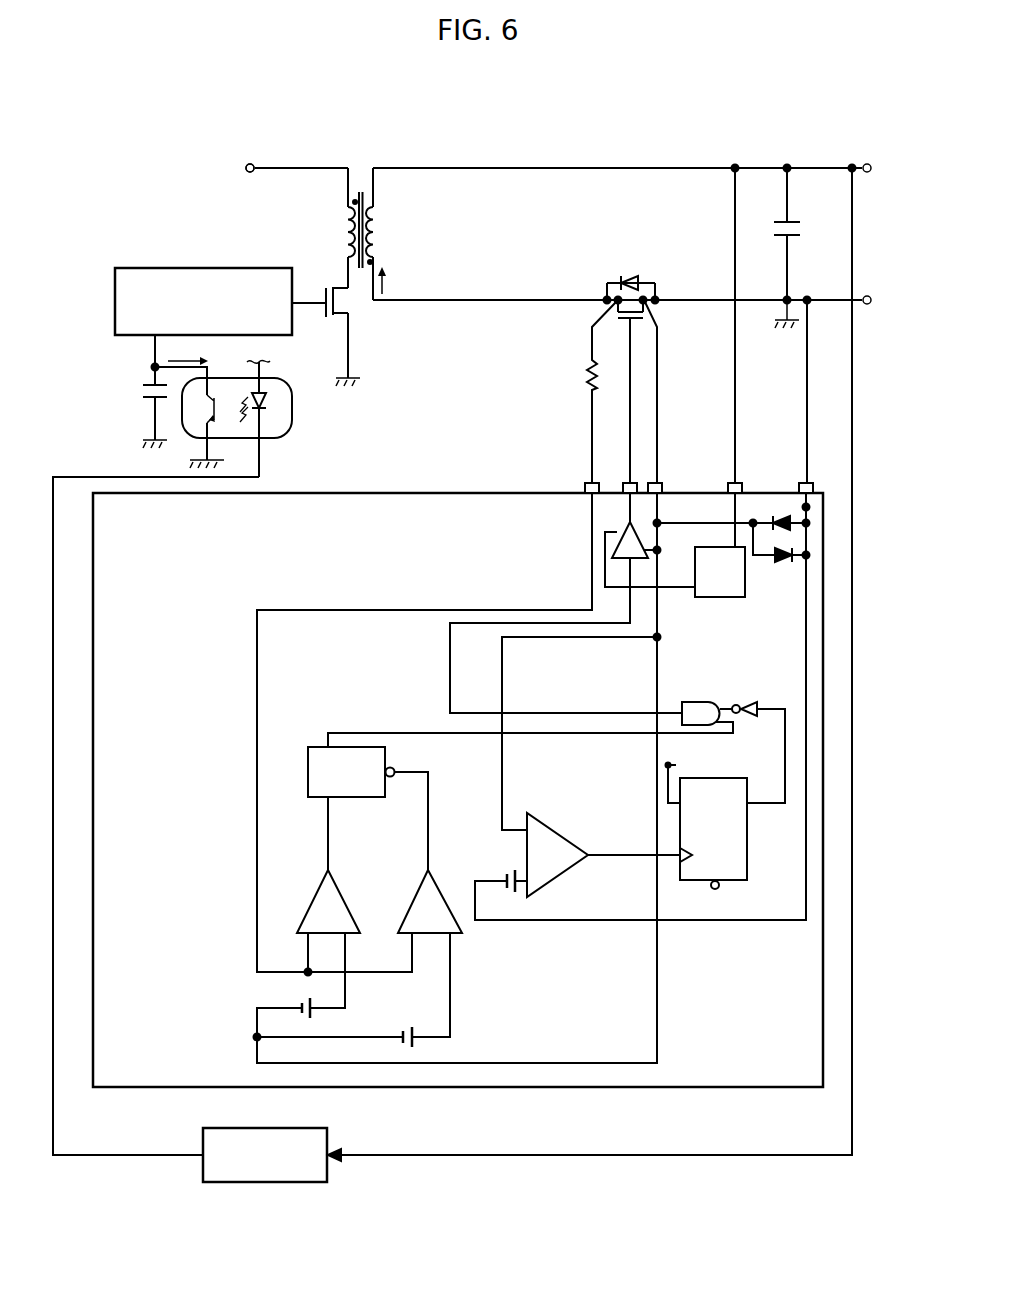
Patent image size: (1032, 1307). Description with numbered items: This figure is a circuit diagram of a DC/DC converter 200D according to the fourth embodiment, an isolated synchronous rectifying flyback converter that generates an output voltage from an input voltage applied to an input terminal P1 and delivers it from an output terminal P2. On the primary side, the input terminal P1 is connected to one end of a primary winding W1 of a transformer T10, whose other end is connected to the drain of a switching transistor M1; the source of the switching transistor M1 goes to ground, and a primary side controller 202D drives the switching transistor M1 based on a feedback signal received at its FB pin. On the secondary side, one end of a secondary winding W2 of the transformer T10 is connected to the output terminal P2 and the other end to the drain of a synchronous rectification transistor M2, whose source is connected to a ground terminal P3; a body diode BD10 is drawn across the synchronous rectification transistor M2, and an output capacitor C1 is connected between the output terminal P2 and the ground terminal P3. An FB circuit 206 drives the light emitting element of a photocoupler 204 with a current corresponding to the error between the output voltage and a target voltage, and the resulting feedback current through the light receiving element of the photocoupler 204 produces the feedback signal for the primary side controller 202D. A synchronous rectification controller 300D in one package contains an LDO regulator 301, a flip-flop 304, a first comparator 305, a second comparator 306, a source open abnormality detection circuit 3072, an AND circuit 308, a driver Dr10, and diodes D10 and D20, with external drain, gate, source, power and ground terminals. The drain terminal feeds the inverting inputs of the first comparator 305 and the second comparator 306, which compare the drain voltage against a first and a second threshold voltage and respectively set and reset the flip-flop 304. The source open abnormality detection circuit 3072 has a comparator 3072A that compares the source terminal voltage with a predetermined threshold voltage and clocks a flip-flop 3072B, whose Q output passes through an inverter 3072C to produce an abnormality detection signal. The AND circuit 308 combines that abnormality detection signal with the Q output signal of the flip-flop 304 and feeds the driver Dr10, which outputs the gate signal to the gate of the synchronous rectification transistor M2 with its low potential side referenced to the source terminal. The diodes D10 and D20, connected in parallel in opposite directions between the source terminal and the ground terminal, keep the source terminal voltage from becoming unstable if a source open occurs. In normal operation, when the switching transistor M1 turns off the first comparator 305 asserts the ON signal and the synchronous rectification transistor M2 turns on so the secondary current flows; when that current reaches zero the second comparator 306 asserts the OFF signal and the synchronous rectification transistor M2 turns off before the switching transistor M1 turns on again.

The DC/DC converter 200D is at (769, 82).
The primary side controller 202D is at (137, 268).
The photocoupler 204 is at (292, 420).
The FB circuit 206 is at (305, 1182).
The synchronous rectification controller 300D is at (463, 492).
The LDO regulator 301 is at (730, 597).
The flip-flop 304 is at (385, 751).
The first comparator 305 is at (346, 937).
The second comparator 306 is at (452, 937).
The AND circuit 308 is at (701, 701).
The source open abnormality detection circuit 3072 is at (663, 793).
The comparator 3072A is at (563, 832).
The flip-flop 3072B is at (739, 880).
The inverter 3072C is at (750, 700).
The transformer T10 is at (365, 219).
The primary winding W1 is at (347, 236).
The secondary winding W2 is at (379, 235).
The switching transistor M1 is at (349, 299).
The synchronous rectification transistor M2 is at (650, 304).
The body diode BD10 is at (626, 279).
The output capacitor C1 is at (802, 248).
The diode D10 is at (766, 513).
The diode D20 is at (789, 565).
The driver Dr10 is at (623, 530).
The input terminal P1 is at (252, 163).
The output terminal P2 is at (870, 163).
The ground terminal P3 is at (870, 295).